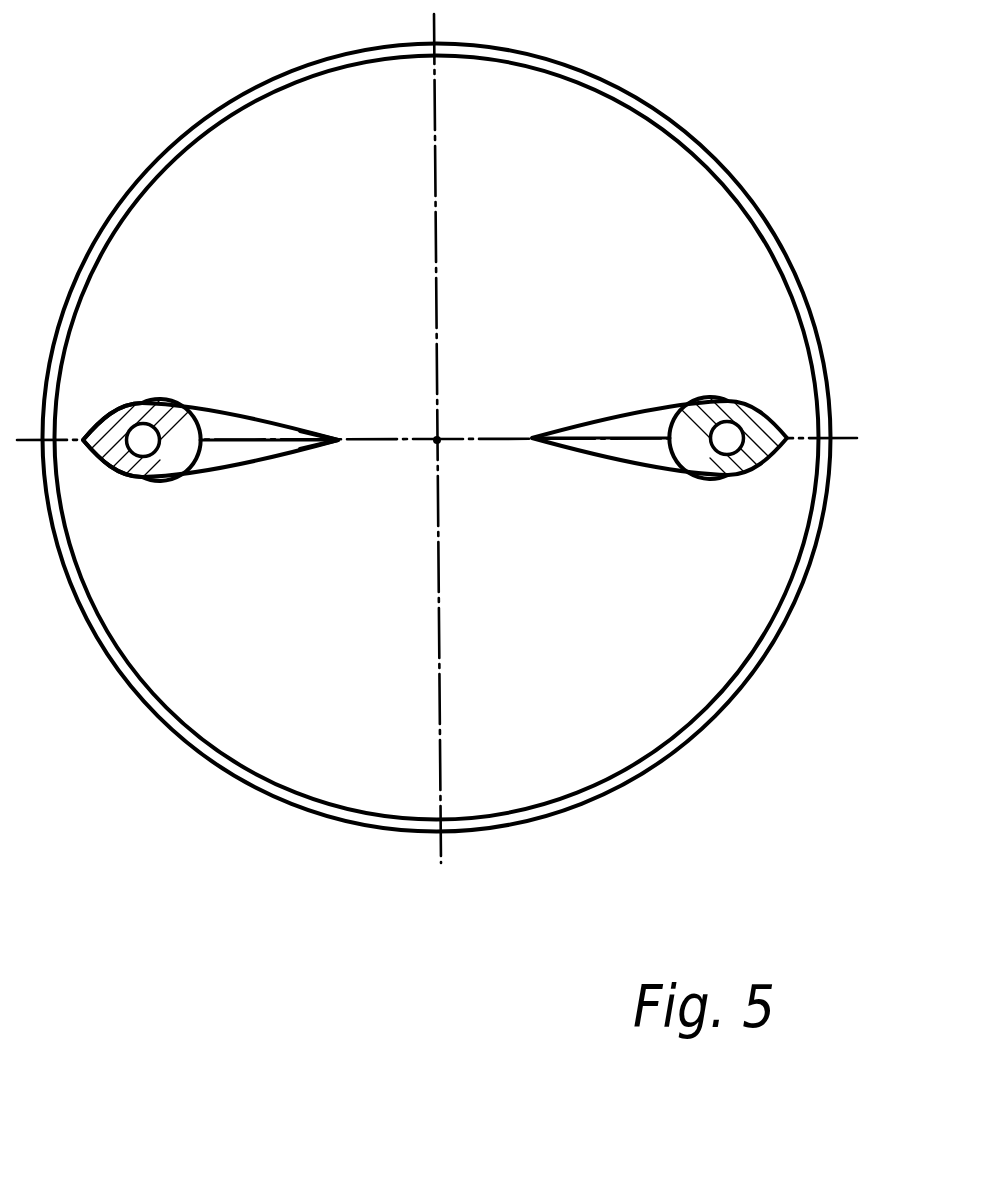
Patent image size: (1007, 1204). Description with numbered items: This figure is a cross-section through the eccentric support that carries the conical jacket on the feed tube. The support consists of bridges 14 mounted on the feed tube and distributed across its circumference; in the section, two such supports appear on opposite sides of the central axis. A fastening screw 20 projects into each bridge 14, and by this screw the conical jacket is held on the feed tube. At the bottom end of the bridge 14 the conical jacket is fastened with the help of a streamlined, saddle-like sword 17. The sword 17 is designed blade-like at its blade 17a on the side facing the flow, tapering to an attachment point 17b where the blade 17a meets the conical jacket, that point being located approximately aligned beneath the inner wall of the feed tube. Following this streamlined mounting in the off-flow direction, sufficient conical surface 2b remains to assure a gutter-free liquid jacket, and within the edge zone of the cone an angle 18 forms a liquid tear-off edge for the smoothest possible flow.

The bridge 14 is at (102, 437).
The fastening screw 20 is at (142, 440).
The streamlined saddle-like sword 17 is at (203, 410).
The blade 17a is at (259, 437).
The attachment point 17b is at (338, 437).
The conical surface 2b is at (70, 442).
The angle 18 is at (738, 677).